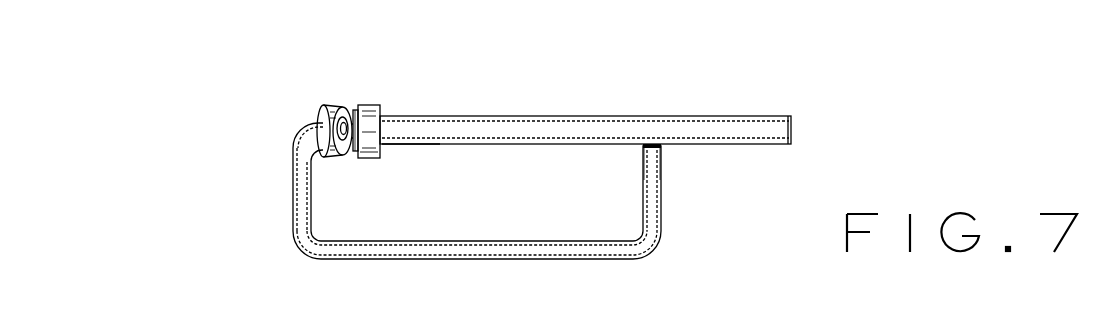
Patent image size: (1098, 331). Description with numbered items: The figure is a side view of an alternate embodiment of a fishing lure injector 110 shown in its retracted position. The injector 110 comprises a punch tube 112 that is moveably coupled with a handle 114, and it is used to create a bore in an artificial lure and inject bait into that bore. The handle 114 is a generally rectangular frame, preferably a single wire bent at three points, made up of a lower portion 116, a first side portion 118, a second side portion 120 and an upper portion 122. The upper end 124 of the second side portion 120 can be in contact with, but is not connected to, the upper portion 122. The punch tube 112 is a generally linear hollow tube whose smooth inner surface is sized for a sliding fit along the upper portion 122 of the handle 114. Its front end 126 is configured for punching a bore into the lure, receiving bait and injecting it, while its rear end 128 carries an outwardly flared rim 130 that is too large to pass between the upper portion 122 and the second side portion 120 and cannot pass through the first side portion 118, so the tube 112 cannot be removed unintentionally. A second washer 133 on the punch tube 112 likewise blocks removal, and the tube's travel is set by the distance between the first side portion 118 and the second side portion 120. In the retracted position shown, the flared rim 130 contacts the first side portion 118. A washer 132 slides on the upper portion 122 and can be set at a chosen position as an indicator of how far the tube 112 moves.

The fishing lure injector 110 is at (285, 122).
The punch tube 112 is at (546, 132).
The handle 114 is at (297, 262).
The lower portion 116 is at (567, 253).
The first side portion 118 is at (293, 192).
The second side portion 120 is at (652, 215).
The upper portion 122 is at (347, 108).
The upper end 124 is at (650, 160).
The front end 126 is at (783, 125).
The rear end 128 is at (410, 137).
The flared rim 130 is at (357, 105).
The washer 132 is at (323, 112).
The second washer 133 is at (368, 150).